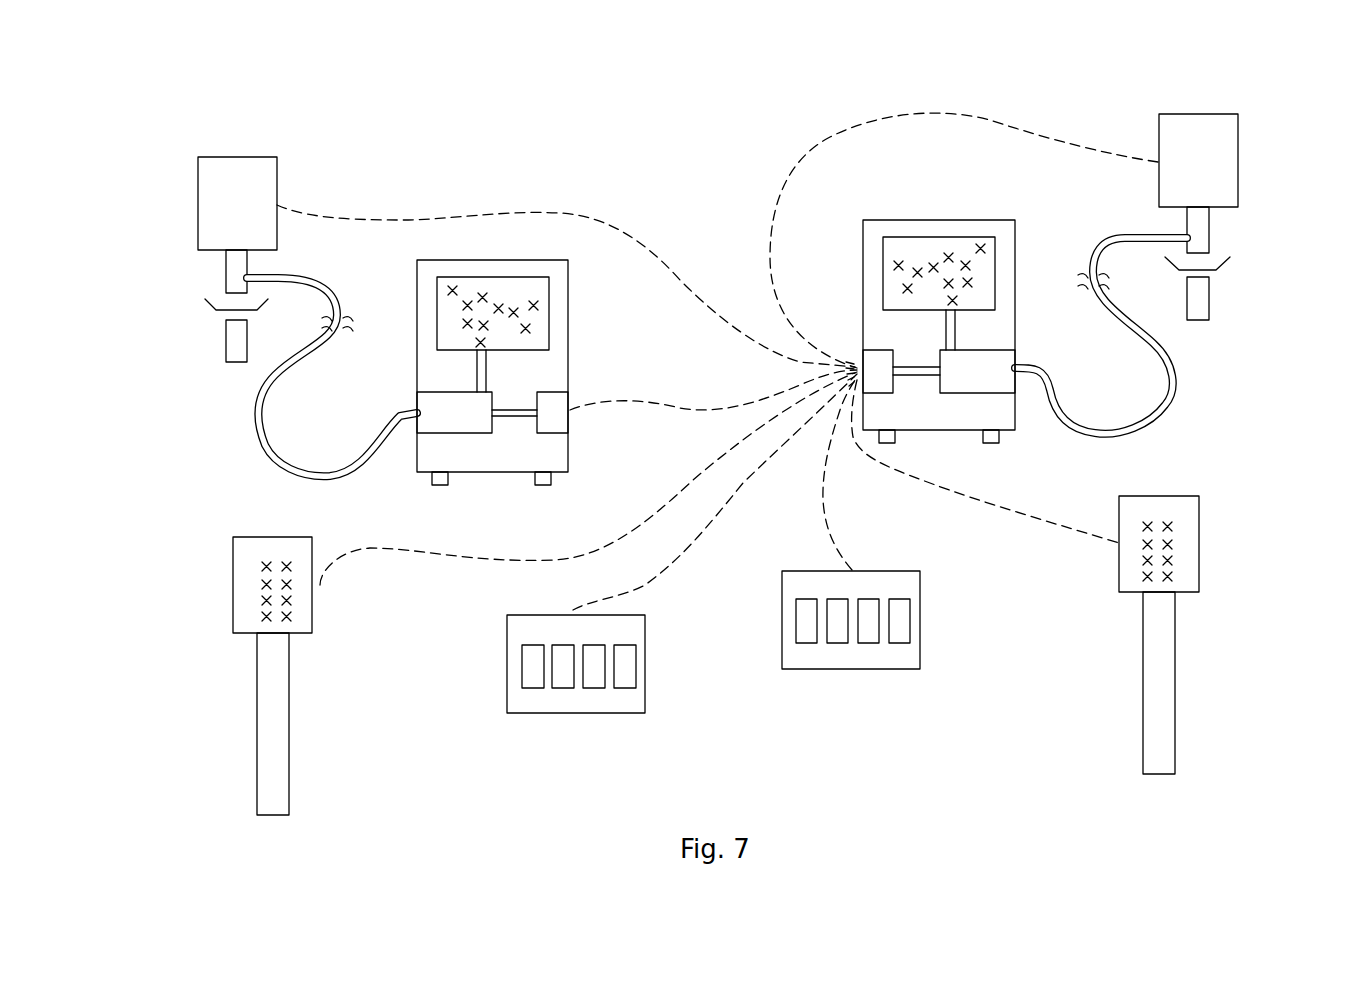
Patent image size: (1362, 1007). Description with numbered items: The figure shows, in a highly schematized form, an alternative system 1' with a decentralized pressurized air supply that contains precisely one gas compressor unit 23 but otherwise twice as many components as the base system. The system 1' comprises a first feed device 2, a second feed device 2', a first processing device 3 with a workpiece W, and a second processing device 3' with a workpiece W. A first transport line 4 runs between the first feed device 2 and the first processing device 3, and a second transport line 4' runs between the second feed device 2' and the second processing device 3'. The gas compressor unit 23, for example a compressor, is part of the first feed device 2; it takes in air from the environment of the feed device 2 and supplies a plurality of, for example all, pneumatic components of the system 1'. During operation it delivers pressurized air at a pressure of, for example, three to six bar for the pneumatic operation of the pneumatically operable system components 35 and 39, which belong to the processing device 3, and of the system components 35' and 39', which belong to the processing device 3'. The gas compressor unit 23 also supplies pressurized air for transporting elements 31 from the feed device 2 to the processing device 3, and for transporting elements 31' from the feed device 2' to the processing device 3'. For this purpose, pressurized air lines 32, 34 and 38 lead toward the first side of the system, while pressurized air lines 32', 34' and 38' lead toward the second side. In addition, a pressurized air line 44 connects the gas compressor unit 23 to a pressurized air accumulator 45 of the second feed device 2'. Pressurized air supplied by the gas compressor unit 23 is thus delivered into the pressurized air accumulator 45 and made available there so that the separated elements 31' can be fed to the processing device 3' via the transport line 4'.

The system 1' is at (642, 119).
The first feed device 2 is at (913, 299).
The second feed device 2' is at (533, 302).
The first processing device 3 is at (1247, 214).
The second processing device 3' is at (187, 241).
The first transport line 4 is at (1132, 343).
The second transport line 4' is at (290, 385).
The gas compressor unit 23 is at (876, 367).
The elements 31 is at (944, 230).
The elements 31' is at (479, 233).
The pressurized air line 32 is at (964, 197).
The pressurized air line 32' is at (566, 243).
The pressurized air line 34 is at (869, 473).
The pressurized air line 34' is at (715, 492).
The pneumatically operable system component 35 is at (851, 681).
The pneumatically operable system component 35' is at (576, 716).
The pressurized air line 38 is at (985, 499).
The pressurized air line 38' is at (588, 505).
The pneumatically operable system component 39 is at (1229, 635).
The pneumatically operable system component 39' is at (315, 676).
The pressurized air line 44 is at (667, 402).
The pressurized air accumulator 45 is at (568, 402).
The workpiece W is at (205, 300).